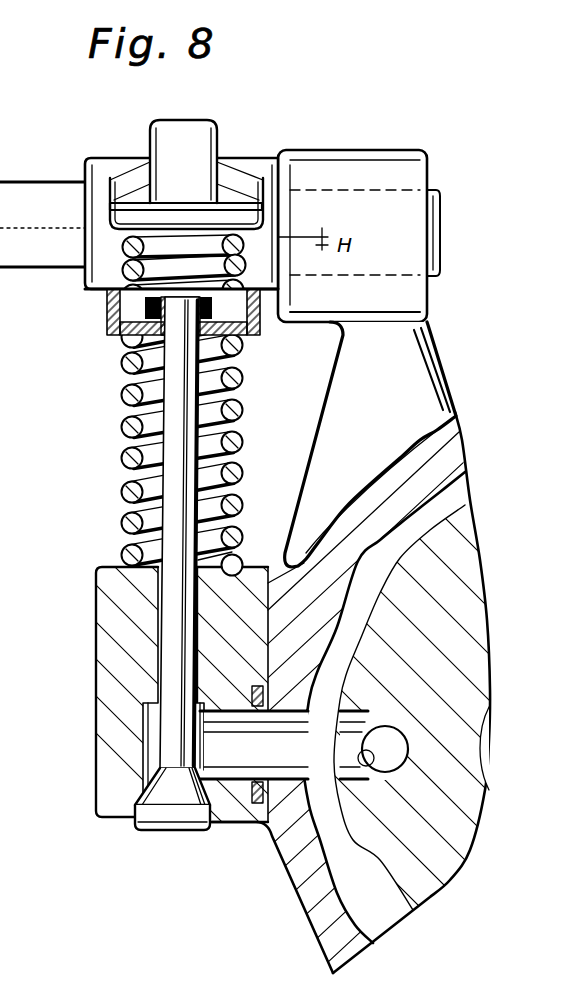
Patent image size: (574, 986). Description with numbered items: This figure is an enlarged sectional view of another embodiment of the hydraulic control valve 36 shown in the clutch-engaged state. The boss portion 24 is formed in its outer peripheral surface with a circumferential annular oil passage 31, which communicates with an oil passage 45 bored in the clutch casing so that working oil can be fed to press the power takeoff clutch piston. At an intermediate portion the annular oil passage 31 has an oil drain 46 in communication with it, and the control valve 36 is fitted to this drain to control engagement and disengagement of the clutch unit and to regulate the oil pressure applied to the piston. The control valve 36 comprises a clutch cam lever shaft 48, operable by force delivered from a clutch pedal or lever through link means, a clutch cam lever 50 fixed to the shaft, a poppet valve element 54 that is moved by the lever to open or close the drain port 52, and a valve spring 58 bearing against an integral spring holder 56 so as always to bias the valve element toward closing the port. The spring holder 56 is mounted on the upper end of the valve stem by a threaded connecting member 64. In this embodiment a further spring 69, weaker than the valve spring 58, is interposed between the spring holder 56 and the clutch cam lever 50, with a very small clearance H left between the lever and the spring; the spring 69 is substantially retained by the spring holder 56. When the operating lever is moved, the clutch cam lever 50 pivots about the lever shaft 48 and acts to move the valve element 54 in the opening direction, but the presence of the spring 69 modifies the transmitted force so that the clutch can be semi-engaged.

The boss portion 24 is at (422, 895).
The annular oil passage 31 is at (307, 924).
The control valve 36 is at (107, 449).
The oil passage 45 is at (278, 864).
The oil drain 46 is at (238, 772).
The clutch cam lever shaft 48 is at (51, 192).
The clutch cam lever 50 is at (208, 138).
The drain port 52 is at (148, 806).
The poppet valve element 54 is at (160, 828).
The spring holder 56 is at (106, 334).
The valve spring 58 is at (122, 488).
The threaded connecting member 64 is at (262, 325).
The spring 69 is at (125, 242).